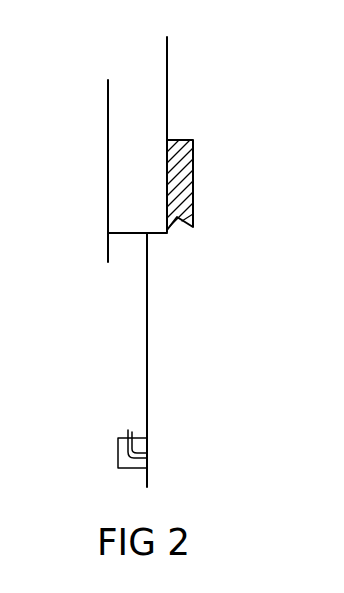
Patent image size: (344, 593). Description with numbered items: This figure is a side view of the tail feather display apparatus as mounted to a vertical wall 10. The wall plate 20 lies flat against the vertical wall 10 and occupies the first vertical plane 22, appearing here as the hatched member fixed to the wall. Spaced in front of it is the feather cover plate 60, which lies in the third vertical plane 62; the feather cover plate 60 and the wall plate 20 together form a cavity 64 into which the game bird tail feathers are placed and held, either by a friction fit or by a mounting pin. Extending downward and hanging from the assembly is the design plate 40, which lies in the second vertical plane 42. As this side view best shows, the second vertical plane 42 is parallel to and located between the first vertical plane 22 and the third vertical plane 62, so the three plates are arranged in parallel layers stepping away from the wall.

The vertical wall 10 is at (193, 192).
The wall plate 20 is at (167, 70).
The first vertical plane 22 is at (167, 103).
The design plate 40 is at (142, 310).
The second vertical plane 42 is at (142, 367).
The feather cover plate 60 is at (103, 105).
The third vertical plane 62 is at (105, 142).
The cavity 64 is at (140, 83).